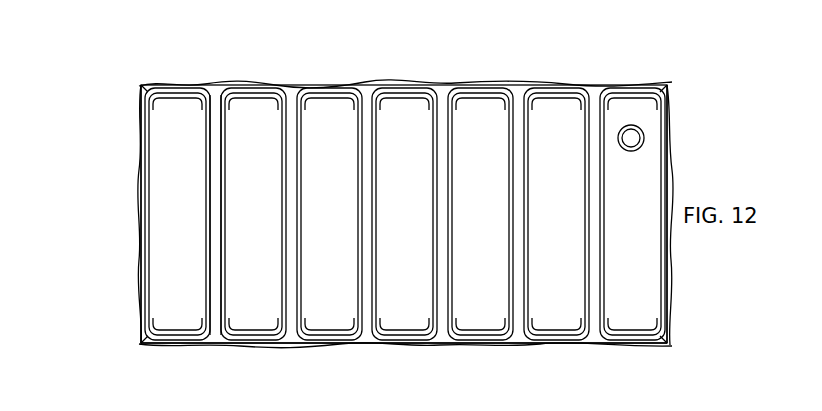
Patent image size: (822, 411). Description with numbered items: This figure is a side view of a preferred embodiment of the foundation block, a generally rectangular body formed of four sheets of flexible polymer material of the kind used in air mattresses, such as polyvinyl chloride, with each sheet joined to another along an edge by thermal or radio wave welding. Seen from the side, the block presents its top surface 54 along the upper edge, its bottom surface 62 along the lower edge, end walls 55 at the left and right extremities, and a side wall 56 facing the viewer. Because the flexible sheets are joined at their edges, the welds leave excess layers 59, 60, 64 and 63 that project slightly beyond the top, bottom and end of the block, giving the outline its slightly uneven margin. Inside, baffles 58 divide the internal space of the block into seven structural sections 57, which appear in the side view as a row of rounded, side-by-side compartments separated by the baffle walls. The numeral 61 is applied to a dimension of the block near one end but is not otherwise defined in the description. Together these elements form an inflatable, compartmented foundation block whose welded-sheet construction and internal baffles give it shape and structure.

The top surface 54 is at (488, 84).
The end walls 55 is at (144, 305).
The side walls 56 is at (92, 398).
The structural sections 57 is at (171, 244).
The baffles 58 is at (214, 168).
The excess layer 59 is at (599, 84).
The excess layer 60 is at (491, 410).
The flange width 61 is at (185, 45).
The bottom surface 62 is at (504, 344).
The excess layer 63 is at (669, 146).
The excess layer 64 is at (293, 345).